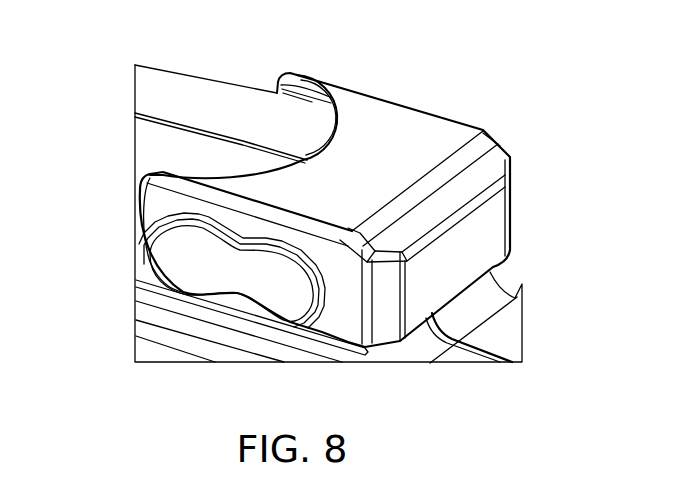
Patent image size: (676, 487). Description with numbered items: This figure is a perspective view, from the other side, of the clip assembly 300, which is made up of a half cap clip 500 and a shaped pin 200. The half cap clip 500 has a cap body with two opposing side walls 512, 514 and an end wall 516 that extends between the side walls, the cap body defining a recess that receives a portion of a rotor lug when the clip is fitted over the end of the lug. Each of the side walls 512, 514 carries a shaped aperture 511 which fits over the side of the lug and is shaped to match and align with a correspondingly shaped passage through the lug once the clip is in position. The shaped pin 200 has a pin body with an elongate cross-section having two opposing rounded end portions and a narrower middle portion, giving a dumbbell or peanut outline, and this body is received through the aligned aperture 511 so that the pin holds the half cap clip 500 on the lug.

The clip assembly 300 is at (453, 103).
The half cap clip 500 is at (388, 123).
The side wall 512 is at (310, 73).
The side wall 514 is at (153, 200).
The shaped aperture 511 is at (153, 237).
The end wall 516 is at (513, 172).
The shaped pin 200 is at (185, 270).